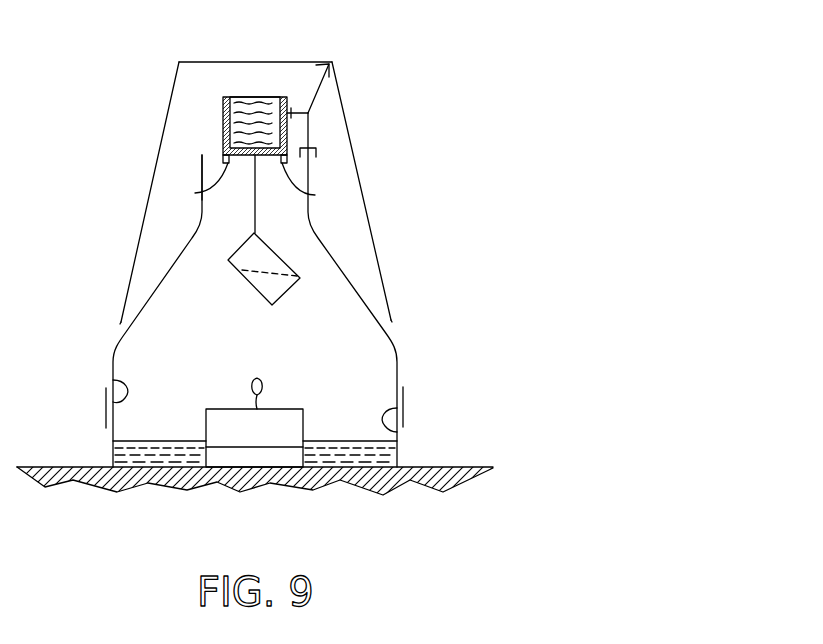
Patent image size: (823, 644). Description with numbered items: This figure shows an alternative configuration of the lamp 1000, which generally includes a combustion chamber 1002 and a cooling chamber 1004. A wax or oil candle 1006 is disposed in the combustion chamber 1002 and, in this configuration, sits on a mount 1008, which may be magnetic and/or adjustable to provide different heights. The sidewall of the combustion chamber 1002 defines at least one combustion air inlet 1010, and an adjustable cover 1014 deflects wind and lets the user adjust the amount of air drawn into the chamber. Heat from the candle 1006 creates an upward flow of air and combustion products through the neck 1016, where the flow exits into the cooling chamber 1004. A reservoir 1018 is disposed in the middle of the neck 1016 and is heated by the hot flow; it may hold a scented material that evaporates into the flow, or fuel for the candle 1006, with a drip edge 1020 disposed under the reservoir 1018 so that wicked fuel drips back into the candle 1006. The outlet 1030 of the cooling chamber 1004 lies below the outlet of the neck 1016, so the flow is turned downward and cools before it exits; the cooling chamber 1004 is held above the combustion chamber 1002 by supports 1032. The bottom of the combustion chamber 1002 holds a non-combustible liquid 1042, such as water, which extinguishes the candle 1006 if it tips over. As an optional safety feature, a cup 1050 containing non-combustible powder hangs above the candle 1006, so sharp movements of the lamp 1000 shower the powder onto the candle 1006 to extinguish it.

The lamp 1000 is at (407, 103).
The combustion chamber 1002 is at (397, 357).
The cooling chamber 1004 is at (373, 241).
The candle 1006 is at (235, 435).
The mount 1008 is at (250, 460).
The combustion air inlet 1010 is at (113, 380).
The adjustable cover 1014 is at (106, 405).
The neck 1016 is at (202, 170).
The reservoir 1018 is at (246, 100).
The drip edge 1020 is at (195, 193).
The outlet 1030 is at (116, 324).
The support 1032 is at (312, 90).
The liquid 1042 is at (113, 452).
The cup 1050 is at (251, 285).